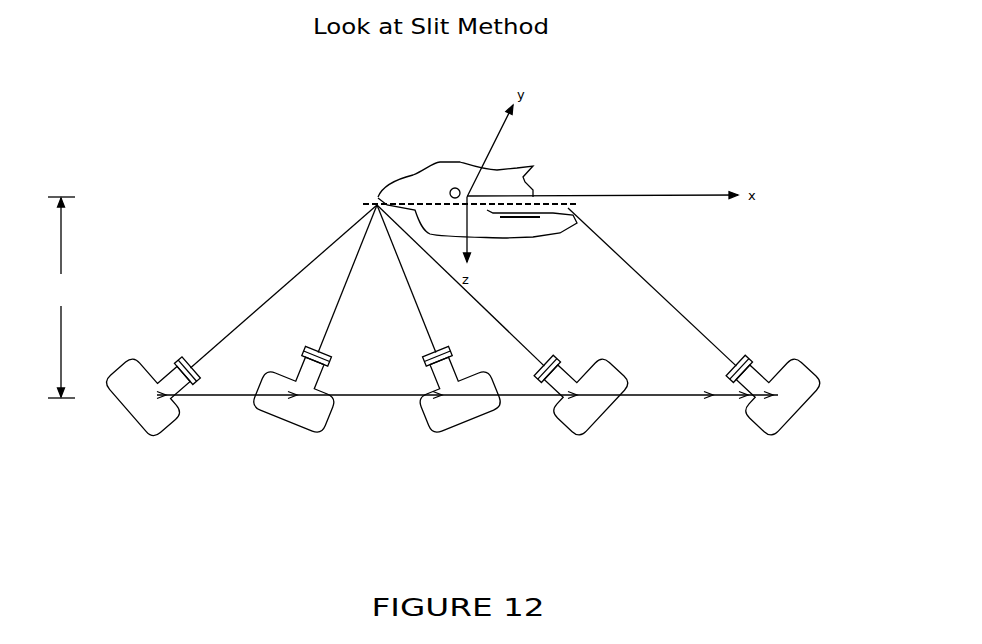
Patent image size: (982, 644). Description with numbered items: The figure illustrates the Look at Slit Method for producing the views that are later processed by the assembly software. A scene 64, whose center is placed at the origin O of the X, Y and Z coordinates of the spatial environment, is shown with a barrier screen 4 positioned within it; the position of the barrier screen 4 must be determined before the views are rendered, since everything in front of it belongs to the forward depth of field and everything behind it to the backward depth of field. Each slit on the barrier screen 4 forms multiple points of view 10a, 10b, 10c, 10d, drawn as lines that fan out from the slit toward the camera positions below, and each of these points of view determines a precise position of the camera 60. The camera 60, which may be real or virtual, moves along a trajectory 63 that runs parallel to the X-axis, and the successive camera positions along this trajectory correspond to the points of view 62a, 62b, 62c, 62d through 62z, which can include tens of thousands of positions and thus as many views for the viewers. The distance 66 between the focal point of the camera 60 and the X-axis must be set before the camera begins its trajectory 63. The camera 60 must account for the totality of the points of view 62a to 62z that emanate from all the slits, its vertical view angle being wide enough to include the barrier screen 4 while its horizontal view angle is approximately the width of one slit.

The barrier screen 4 is at (363, 197).
The scene 64 is at (531, 158).
The distance 66 is at (61, 297).
The point of view 10a is at (283, 286).
The point of view 10b is at (338, 279).
The point of view 10c is at (406, 279).
The point of view 10d is at (556, 285).
The camera 60 is at (463, 413).
The point of view 62a is at (156, 385).
The point of view 62b is at (300, 385).
The point of view 62c is at (453, 385).
The point of view 62d is at (577, 384).
The point of view 62z is at (769, 384).
The trajectory 63 is at (695, 402).